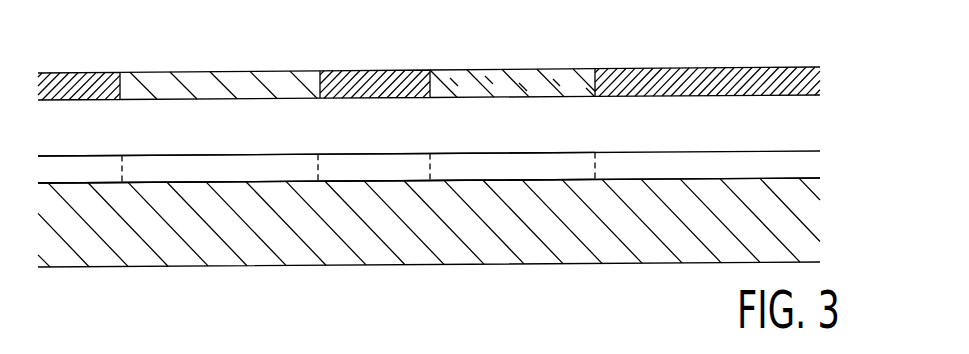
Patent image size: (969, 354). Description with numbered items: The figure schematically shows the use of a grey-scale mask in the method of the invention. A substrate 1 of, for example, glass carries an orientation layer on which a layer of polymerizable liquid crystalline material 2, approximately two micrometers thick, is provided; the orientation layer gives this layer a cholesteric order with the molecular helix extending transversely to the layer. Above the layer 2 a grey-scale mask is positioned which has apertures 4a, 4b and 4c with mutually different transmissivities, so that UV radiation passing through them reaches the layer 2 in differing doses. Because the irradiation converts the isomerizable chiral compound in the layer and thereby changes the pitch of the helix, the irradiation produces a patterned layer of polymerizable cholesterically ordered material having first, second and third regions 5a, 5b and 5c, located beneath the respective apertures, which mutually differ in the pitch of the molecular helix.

The substrate 1 is at (571, 243).
The layer of polymerizable liquid crystalline material 2 is at (652, 163).
The aperture 4a is at (268, 83).
The aperture 4b is at (553, 83).
The aperture 4c is at (95, 85).
The first region 5a is at (182, 170).
The second region 5b is at (477, 166).
The third region 5c is at (82, 170).